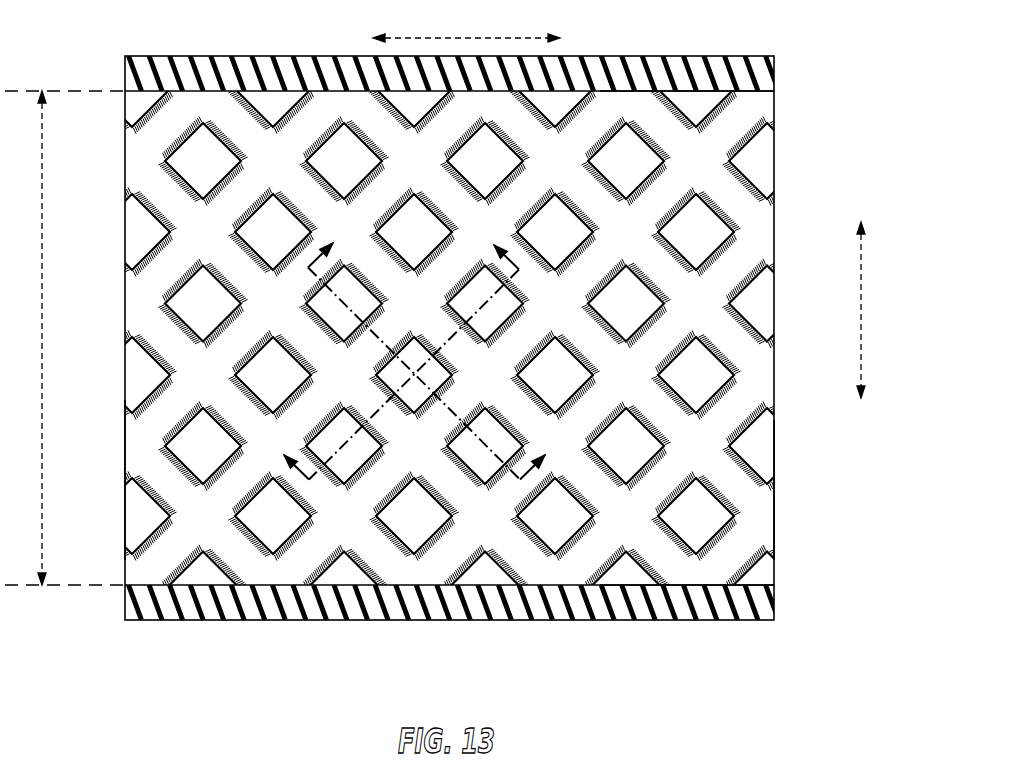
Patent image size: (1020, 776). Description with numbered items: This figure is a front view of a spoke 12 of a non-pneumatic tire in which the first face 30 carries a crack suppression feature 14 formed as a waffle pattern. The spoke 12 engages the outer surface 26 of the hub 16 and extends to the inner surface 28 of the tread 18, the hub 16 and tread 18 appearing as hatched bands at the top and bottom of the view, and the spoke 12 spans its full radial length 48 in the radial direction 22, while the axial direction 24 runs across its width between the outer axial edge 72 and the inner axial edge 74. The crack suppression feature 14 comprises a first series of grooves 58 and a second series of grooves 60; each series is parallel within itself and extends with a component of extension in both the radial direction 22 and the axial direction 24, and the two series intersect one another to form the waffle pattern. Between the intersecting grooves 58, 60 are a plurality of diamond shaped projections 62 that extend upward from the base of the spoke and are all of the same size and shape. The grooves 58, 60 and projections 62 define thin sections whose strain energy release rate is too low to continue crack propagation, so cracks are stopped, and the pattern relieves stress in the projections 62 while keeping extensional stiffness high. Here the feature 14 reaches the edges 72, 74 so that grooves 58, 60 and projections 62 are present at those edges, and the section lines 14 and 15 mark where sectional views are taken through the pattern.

The spoke 12 is at (775, 233).
The crack suppression feature 14 is at (810, 278).
The section line 15- 15 is at (441, 348).
The hub 16 is at (750, 72).
The tread 18 is at (740, 613).
The radial direction 22 is at (861, 310).
The axial direction 24 is at (467, 38).
The outer surface 26 is at (762, 93).
The inner surface 28 is at (748, 582).
The first face 30 is at (203, 306).
The radial length 48 is at (42, 203).
The first series of grooves 58 is at (157, 570).
The second series of grooves 60 is at (655, 127).
The projections 62 is at (700, 373).
The outer axial edge 72 is at (123, 470).
The inner axial edge 74 is at (775, 502).